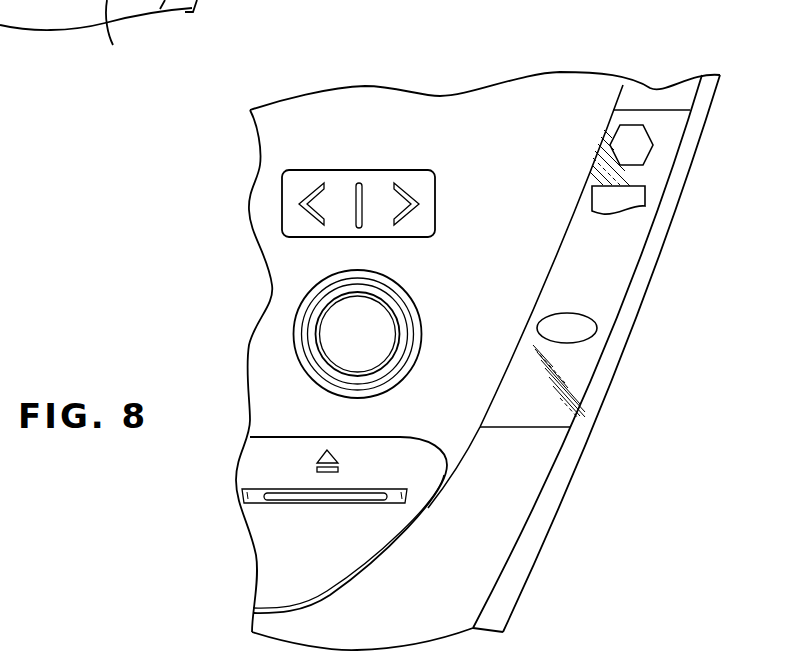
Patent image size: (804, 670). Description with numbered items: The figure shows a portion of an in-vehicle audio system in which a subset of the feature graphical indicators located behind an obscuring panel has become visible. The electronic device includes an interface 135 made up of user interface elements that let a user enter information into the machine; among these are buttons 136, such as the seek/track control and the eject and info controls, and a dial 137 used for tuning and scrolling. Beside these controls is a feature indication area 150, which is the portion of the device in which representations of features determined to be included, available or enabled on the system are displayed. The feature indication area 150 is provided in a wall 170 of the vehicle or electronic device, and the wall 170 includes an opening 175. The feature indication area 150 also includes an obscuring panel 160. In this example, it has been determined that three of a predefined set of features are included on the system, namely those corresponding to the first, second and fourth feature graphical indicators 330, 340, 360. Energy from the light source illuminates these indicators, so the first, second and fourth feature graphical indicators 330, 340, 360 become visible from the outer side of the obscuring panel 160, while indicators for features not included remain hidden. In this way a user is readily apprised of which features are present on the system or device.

The interface 135 is at (98, 35).
The feature indication area 150 is at (434, 80).
The obscuring panel 160 is at (670, 118).
The wall 170 is at (480, 563).
The opening 175 is at (520, 427).
The buttons 136 is at (295, 183).
The dials 137 is at (347, 327).
The first feature graphical indicator 330 is at (643, 143).
The second feature graphical indicator 340 is at (632, 202).
The fourth feature graphical indicator 360 is at (590, 325).